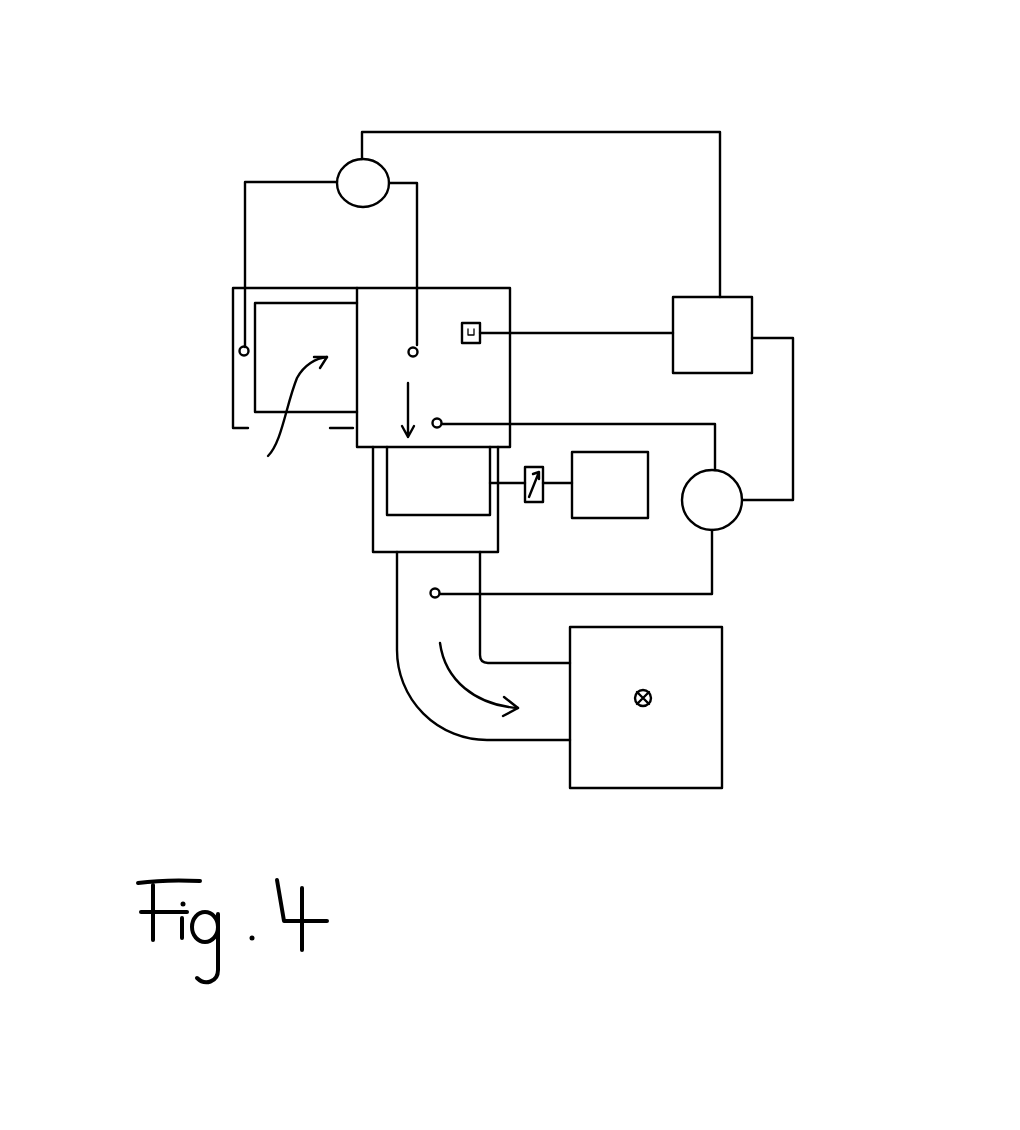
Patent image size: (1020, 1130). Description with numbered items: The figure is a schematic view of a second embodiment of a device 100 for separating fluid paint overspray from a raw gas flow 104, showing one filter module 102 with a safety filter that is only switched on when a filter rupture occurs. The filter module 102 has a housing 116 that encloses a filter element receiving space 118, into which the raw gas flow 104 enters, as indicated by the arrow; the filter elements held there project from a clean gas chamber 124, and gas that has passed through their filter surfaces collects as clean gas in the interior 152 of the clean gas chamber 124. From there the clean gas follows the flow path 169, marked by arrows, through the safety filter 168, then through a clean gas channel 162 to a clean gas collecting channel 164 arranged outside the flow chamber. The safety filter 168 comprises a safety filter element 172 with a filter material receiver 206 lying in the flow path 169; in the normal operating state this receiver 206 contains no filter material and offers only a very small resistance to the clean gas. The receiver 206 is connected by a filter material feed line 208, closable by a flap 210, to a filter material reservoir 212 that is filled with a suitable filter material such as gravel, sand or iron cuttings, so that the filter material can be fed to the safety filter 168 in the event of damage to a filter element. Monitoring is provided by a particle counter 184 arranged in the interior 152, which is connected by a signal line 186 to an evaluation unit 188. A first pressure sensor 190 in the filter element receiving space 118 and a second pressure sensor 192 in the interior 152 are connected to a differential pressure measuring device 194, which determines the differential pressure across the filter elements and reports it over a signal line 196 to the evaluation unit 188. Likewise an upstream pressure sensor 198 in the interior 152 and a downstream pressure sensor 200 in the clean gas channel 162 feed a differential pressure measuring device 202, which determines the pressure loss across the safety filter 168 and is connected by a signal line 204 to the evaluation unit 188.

The device for separating fluid paint overspray 100 is at (210, 223).
The filter module 102 is at (225, 430).
The raw gas flow 104 is at (288, 425).
The housing 116 is at (233, 320).
The filter element receiving space 118 is at (250, 386).
The clean gas chamber 124 is at (513, 410).
The interior of the clean gas chamber 152 is at (492, 382).
The clean gas channel 162 is at (534, 502).
The clean gas collecting channel 164 is at (723, 690).
The safety filter 168 is at (375, 492).
The flow path of the clean gas 169 is at (415, 392).
The safety filter element 172 is at (405, 493).
The particle counter 184 is at (471, 323).
The signal line 186 is at (583, 333).
The evaluation unit 188 is at (722, 328).
The first pressure sensor 190 is at (239, 351).
The second pressure sensor 192 is at (418, 349).
The differential pressure measuring device 194 is at (348, 163).
The signal line 196 is at (598, 132).
The upstream pressure sensor 198 is at (437, 428).
The downstream pressure sensor 200 is at (431, 597).
The differential pressure measuring device 202 is at (740, 517).
The signal line 204 is at (793, 418).
The filter material receiver 206 is at (433, 497).
The filter material feed line 208 is at (510, 484).
The flap 210 is at (478, 743).
The filter material reservoir 212 is at (615, 493).